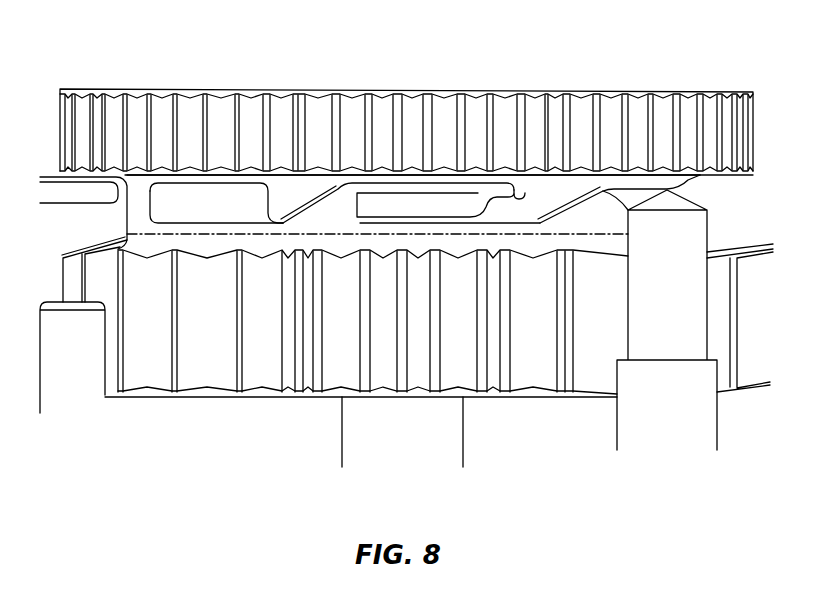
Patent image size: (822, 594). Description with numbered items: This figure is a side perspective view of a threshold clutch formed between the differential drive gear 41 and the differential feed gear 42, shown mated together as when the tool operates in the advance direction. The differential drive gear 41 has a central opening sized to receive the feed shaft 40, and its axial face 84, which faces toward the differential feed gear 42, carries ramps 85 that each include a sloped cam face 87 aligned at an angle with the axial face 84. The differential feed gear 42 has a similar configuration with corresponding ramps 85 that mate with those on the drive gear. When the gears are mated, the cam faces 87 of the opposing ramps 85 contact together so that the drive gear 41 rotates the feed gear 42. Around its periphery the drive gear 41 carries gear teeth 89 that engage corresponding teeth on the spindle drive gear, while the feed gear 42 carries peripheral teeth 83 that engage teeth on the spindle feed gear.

The feed shaft 40 is at (440, 432).
The differential drive gear 41 is at (583, 337).
The differential feed gear 42 is at (688, 123).
The peripheral teeth 83 is at (245, 108).
The axial face 84 is at (516, 196).
The ramps 85 is at (295, 200).
The cam face 87 is at (332, 188).
The gear teeth 89 is at (240, 323).